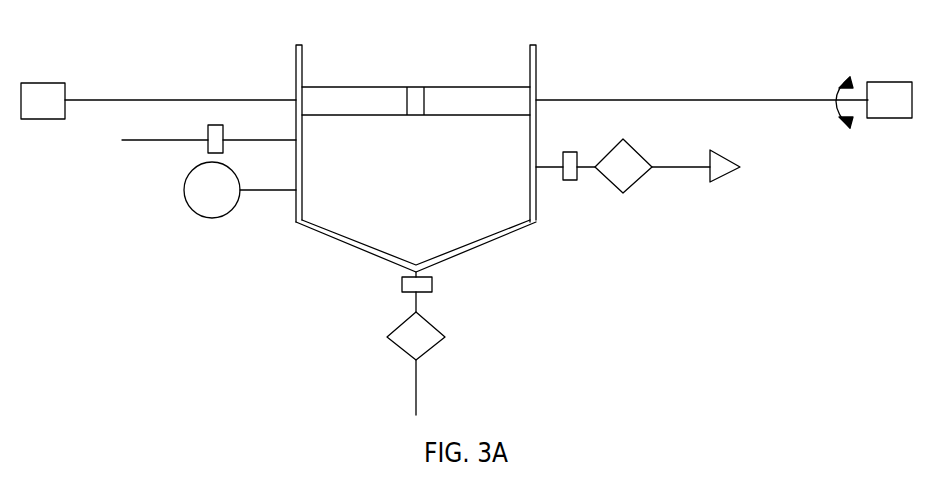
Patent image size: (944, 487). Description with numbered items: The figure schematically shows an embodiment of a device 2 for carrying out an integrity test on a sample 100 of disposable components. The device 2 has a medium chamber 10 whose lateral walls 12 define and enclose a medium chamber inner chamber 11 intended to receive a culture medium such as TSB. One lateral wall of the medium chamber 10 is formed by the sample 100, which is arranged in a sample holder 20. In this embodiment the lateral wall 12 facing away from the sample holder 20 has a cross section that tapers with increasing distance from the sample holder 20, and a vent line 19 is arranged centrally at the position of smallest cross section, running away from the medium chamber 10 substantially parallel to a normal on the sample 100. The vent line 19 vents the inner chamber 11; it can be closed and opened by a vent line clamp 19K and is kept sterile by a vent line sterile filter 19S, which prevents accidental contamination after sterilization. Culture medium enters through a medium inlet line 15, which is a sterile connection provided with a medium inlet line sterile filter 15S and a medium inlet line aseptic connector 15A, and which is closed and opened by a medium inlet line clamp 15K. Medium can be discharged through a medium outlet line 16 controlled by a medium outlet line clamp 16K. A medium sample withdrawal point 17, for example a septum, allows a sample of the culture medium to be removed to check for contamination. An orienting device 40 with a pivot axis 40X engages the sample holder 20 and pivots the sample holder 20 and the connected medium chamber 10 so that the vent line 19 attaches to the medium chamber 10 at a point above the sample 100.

The device 2 is at (735, 310).
The medium chamber 10 is at (540, 225).
The medium chamber inner chamber 11 is at (428, 188).
The lateral wall 12 is at (348, 245).
The medium inlet line 15 is at (683, 167).
The medium inlet line aseptic connector 15A is at (737, 159).
The medium inlet line clamp 15K is at (569, 184).
The medium inlet line sterile filter 15S is at (634, 159).
The medium outlet line 16 is at (165, 140).
The medium outlet line clamp 16K is at (234, 131).
The medium sample withdrawal point 17 is at (220, 218).
The vent line 19 is at (416, 312).
The vent line clamp 19K is at (436, 292).
The vent line sterile filter 19S is at (406, 346).
The sample holder 20 is at (296, 95).
The orienting device 40 is at (902, 114).
The pivot axis 40X is at (768, 100).
The sample 100 is at (540, 93).